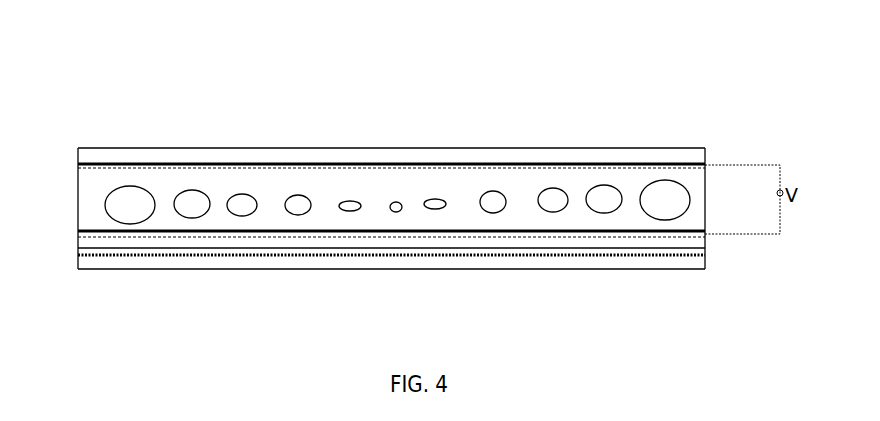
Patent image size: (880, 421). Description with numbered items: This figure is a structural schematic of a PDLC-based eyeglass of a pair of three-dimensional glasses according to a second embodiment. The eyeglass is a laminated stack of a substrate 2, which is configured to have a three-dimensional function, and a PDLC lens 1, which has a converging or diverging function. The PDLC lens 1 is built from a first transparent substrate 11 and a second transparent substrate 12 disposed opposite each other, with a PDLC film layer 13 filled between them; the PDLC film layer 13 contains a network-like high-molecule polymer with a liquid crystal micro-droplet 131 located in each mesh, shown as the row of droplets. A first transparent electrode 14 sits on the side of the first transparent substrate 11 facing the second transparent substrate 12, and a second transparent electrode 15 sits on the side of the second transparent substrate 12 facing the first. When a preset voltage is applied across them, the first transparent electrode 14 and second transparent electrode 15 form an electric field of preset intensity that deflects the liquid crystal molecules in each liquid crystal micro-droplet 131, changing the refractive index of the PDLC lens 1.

The PDLC lens 1 is at (73, 252).
The substrate 2 is at (567, 263).
The first transparent substrate 11 is at (682, 153).
The second transparent substrate 12 is at (697, 245).
The PDLC film layer 13 is at (424, 140).
The liquid crystal micro-droplet 131 is at (132, 202).
The first transparent electrode 14 is at (377, 163).
The second transparent electrode 15 is at (450, 232).